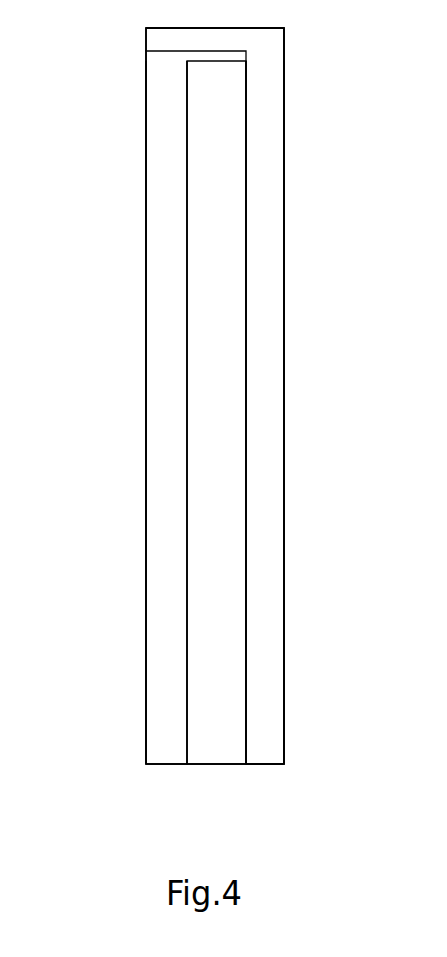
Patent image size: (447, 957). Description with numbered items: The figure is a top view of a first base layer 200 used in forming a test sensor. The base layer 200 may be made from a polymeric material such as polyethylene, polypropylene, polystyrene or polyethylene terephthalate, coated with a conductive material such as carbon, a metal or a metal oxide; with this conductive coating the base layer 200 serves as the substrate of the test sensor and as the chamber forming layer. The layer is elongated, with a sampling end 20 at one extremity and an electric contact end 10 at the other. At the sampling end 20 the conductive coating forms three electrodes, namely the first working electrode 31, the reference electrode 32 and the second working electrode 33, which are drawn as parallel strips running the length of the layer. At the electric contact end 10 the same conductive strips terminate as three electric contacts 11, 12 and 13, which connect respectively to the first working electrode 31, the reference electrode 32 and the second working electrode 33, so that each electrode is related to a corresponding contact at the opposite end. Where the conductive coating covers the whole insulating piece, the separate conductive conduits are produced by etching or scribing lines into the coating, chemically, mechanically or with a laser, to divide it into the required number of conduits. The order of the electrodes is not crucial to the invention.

The electric contact end 10 is at (170, 396).
The electric contact 11 is at (163, 443).
The electric contact 12 is at (216, 443).
The electric contact 13 is at (265, 443).
The sampling end 20 is at (168, 396).
The first working electrode 31 is at (172, 155).
The reference electrode 32 is at (220, 174).
The second working electrode 33 is at (268, 119).
The base layer 200 is at (164, 396).